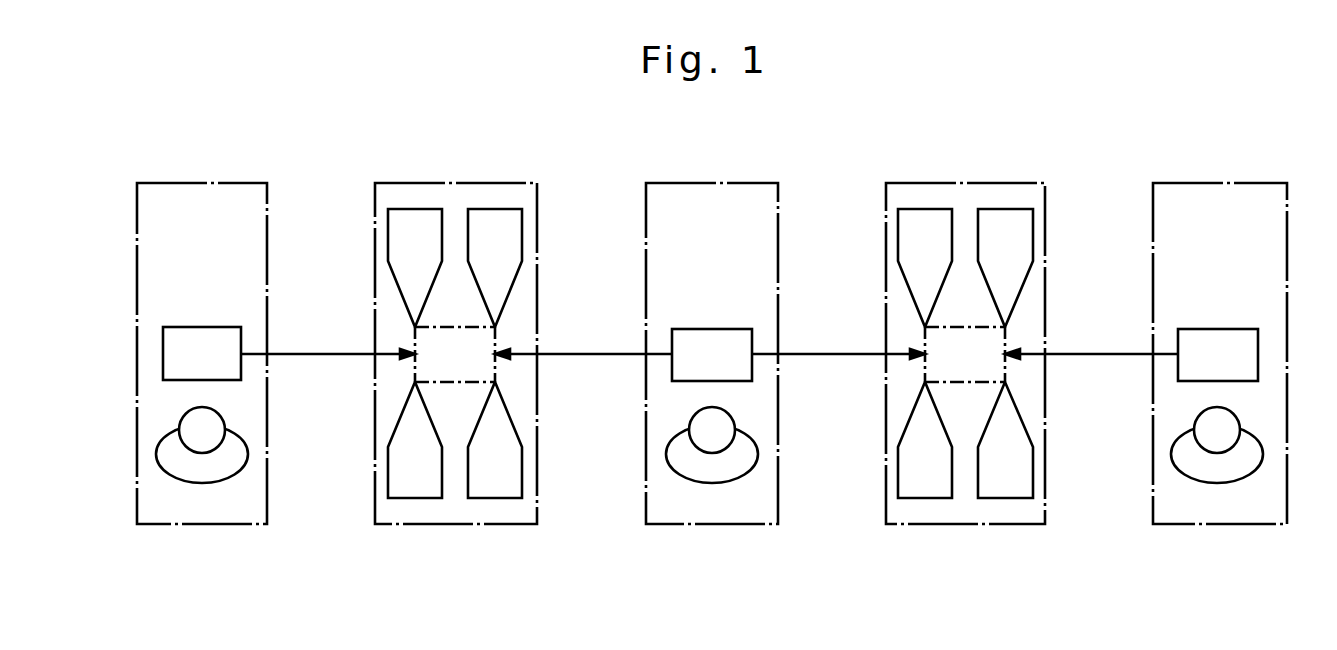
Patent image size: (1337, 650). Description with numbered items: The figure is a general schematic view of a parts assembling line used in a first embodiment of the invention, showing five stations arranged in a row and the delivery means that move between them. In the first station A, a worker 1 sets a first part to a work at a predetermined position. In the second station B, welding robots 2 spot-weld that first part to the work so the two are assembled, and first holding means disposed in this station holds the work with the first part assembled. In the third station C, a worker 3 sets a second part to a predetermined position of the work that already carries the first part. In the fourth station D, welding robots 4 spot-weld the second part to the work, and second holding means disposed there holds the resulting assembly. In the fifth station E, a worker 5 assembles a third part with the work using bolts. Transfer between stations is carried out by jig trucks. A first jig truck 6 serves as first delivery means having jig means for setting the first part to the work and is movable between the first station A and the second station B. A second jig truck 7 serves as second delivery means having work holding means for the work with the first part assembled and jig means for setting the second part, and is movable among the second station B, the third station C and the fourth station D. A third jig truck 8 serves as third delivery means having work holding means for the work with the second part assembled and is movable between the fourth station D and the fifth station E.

The worker 1 is at (166, 470).
The welding robots 2 is at (407, 500).
The worker 3 is at (720, 483).
The welding robots 4 is at (913, 500).
The worker 5 is at (1233, 483).
The first jig truck 6 is at (163, 372).
The second jig truck 7 is at (672, 367).
The third jig truck 8 is at (1178, 370).
The first station A is at (228, 525).
The second station B is at (432, 525).
The third station C is at (670, 525).
The fourth station D is at (937, 525).
The fifth station E is at (1183, 525).